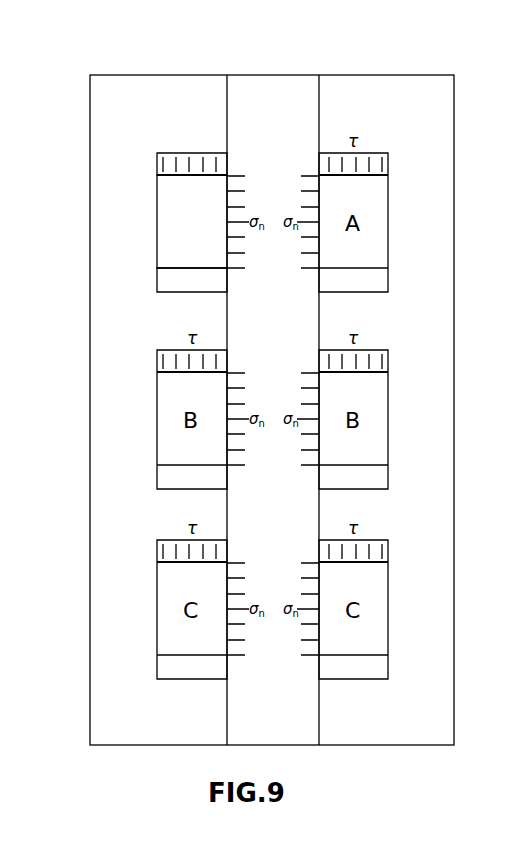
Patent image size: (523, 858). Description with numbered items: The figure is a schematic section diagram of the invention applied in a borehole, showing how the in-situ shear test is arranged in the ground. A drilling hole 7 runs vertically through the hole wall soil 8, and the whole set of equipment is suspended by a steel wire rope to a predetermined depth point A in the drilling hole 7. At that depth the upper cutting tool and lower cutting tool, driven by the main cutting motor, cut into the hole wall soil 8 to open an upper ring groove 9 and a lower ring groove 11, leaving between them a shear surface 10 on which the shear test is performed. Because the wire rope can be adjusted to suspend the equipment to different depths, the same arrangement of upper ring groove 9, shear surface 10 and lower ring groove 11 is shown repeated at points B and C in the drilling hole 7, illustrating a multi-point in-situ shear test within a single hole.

The drilling hole 7 is at (248, 90).
The hole wall soil 8 is at (152, 108).
The upper ring groove 9 is at (155, 156).
The shear surface 10 is at (157, 223).
The lower ring groove 11 is at (167, 282).